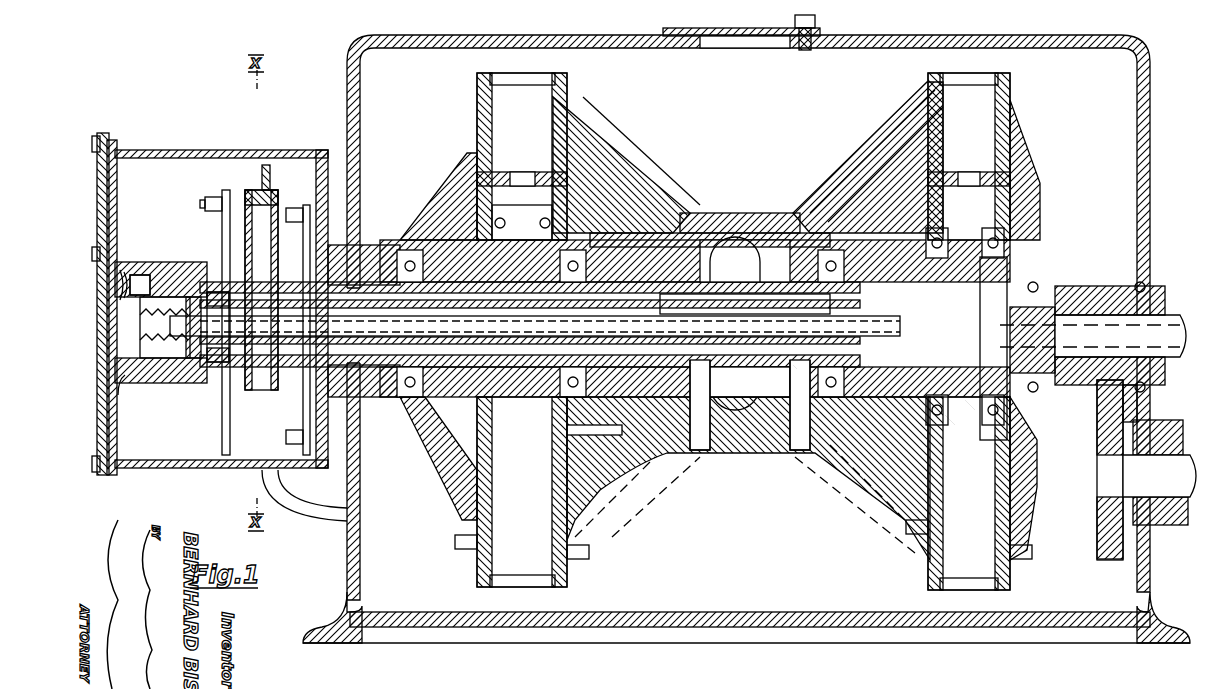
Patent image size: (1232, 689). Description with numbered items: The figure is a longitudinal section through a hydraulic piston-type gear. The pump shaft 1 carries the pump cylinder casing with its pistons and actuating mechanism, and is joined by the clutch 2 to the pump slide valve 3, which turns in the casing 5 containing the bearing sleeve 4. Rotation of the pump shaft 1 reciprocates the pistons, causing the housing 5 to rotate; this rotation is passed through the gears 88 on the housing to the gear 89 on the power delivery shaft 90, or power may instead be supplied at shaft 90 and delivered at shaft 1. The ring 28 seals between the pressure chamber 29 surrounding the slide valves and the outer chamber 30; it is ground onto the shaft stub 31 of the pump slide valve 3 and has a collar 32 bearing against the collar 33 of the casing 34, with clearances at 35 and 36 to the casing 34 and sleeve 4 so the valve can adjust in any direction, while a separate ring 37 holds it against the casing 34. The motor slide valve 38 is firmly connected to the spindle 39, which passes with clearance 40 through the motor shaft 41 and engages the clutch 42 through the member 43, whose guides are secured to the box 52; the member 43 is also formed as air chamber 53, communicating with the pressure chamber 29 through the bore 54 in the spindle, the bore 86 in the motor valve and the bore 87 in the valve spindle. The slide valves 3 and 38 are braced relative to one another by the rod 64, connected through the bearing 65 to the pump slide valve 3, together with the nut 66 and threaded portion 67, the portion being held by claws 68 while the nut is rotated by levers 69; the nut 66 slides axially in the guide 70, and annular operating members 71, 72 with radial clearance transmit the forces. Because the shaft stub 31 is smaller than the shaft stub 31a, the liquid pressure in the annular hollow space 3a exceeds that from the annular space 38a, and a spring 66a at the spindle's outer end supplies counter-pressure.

The pump shaft 1 is at (1025, 318).
The clutch 2 is at (958, 318).
The pump slide valve 3 is at (788, 232).
The annular hollow space 3a is at (810, 225).
The bearing sleeve 4 is at (735, 232).
The casing 5 is at (712, 232).
The ring 28 is at (877, 232).
The pressure chamber 29 is at (770, 232).
The outer chamber 30 is at (897, 232).
The shaft stub 31 is at (905, 395).
The shaft stub 31a is at (620, 192).
The collar 32 is at (795, 365).
The collar 33 is at (870, 365).
The casing 34 is at (950, 420).
The clearance 35 is at (853, 232).
The clearance 36 is at (836, 230).
The separate ring 37 is at (970, 405).
The motor slide valve 38 is at (688, 217).
The annular space 38a is at (665, 232).
The spindle 39 is at (410, 250).
The clearance 40 is at (445, 255).
The motor shaft 41 is at (337, 240).
The clutch 42 is at (266, 168).
The member 43 is at (258, 198).
The box 52 is at (205, 468).
The air chamber 53 is at (262, 235).
The bore 54 is at (382, 258).
The rod 64 is at (690, 360).
The bearing 65 is at (745, 360).
The nut 66 is at (192, 262).
The spring 66a is at (118, 395).
The threaded portion 67 is at (160, 385).
The claws 68 is at (131, 262).
The levers 69 is at (220, 202).
The guide 70 is at (153, 265).
The operating member 71 is at (228, 352).
The operating member 72 is at (192, 385).
The bore 86 is at (745, 323).
The bore 87 is at (660, 303).
The gears 88 is at (1092, 385).
The gear 89 is at (1097, 522).
The power delivery shaft 90 is at (1160, 460).